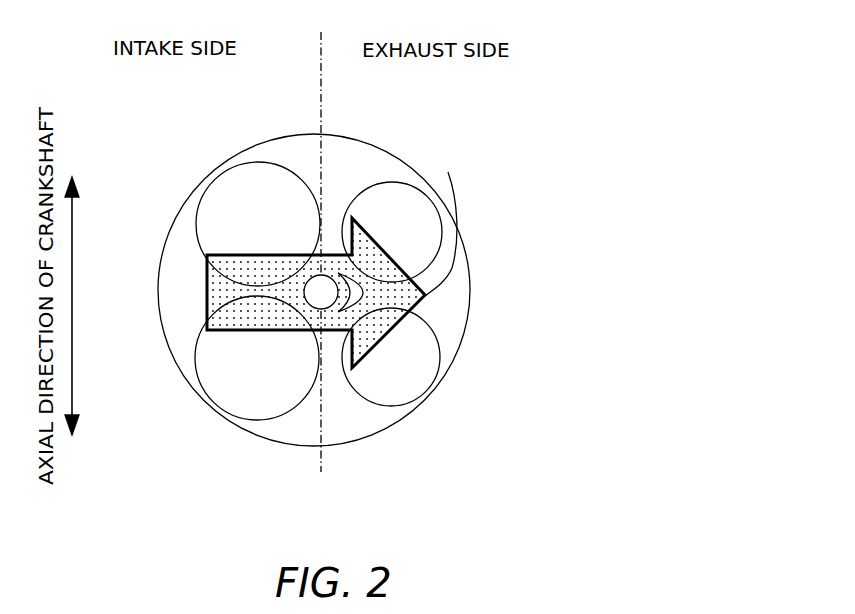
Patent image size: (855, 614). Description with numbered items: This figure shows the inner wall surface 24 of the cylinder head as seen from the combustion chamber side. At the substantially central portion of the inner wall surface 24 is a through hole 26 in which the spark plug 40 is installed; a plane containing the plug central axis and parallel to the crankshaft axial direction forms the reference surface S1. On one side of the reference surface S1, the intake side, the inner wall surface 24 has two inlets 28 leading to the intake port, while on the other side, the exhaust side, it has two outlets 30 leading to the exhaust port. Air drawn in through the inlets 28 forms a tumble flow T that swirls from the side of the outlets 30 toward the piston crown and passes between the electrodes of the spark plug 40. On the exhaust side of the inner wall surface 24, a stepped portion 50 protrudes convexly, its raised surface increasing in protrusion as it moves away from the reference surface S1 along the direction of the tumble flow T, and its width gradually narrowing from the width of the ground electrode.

The reference surface S1 is at (323, 237).
The inner wall surface 24 is at (300, 152).
The through hole 26 is at (321, 309).
The inlets 28 is at (230, 197).
The outlets 30 is at (415, 205).
The spark plug 40 is at (320, 276).
The stepped portion 50 is at (424, 296).
The tumble flow T is at (457, 232).